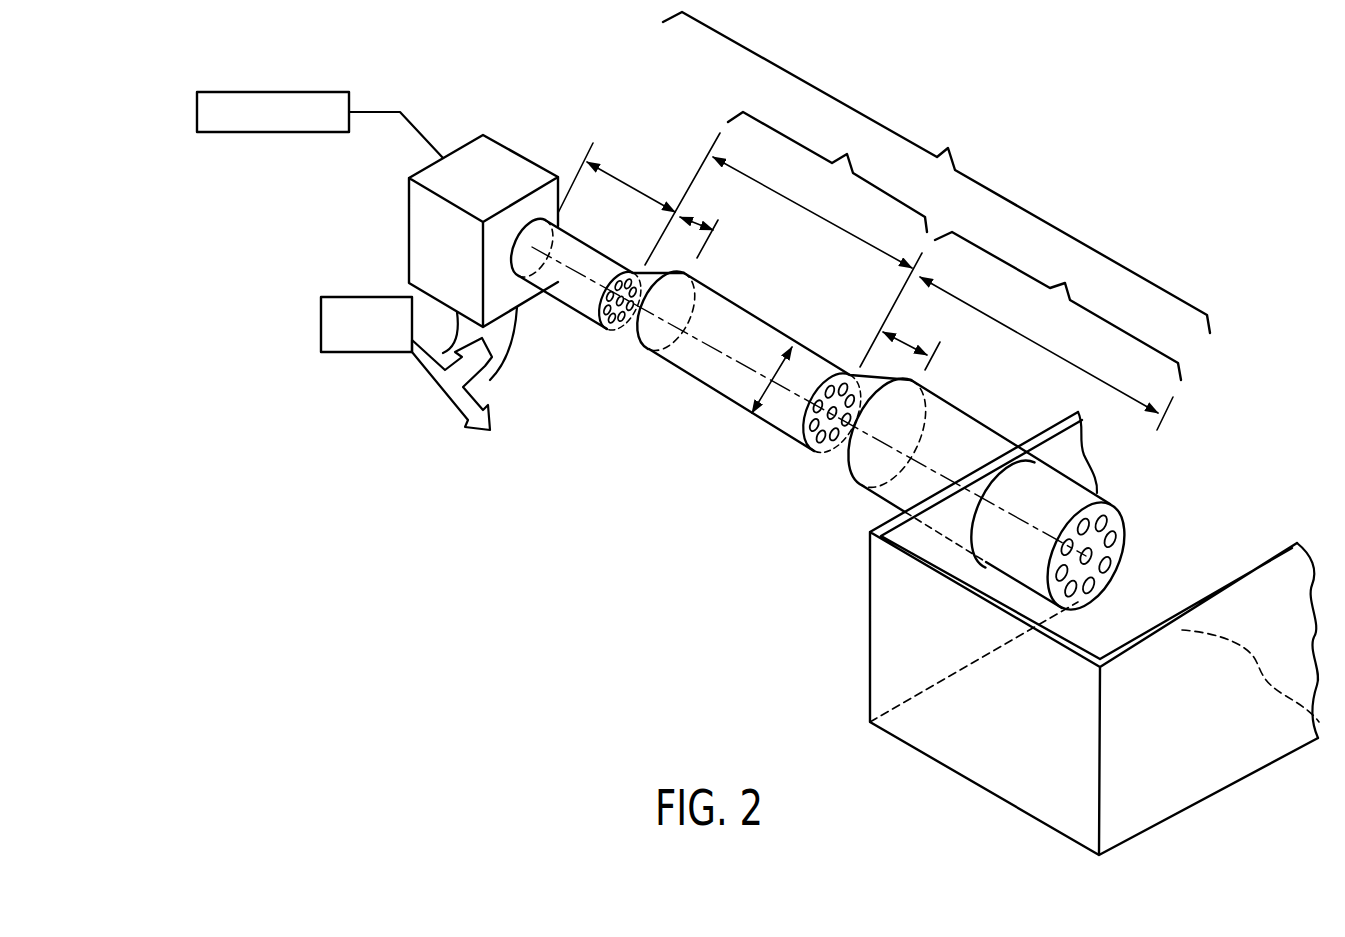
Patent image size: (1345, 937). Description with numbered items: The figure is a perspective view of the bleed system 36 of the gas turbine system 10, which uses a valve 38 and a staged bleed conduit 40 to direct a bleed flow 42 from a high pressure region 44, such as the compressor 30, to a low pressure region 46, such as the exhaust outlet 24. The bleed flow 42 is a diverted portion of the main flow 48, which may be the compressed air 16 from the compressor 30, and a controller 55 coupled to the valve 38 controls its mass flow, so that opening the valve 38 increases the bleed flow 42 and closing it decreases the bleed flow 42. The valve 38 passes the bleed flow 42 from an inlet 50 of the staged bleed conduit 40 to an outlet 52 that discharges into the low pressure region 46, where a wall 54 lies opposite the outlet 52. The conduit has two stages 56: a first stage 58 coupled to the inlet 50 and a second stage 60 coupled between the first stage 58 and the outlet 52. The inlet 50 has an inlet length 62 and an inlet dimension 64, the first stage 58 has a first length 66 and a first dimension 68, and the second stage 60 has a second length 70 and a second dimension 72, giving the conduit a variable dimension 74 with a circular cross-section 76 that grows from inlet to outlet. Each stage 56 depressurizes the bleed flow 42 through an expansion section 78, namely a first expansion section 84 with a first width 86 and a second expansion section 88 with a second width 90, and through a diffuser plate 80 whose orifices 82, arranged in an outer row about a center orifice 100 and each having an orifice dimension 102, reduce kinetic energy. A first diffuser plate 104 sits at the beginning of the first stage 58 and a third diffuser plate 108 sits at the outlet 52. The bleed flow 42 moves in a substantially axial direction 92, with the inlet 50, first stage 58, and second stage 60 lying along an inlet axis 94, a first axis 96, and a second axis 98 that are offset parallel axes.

The gas turbine system 10 is at (522, 675).
The compressed air 16 is at (431, 391).
The exhaust outlet 24 is at (1063, 633).
The compressor 30 is at (366, 287).
The bleed system 36 is at (443, 480).
The valve 38 is at (523, 153).
The staged bleed conduit 40 is at (936, 172).
The bleed flow 42 is at (485, 380).
The high pressure region 44 is at (380, 339).
The low pressure region 46 is at (1081, 633).
The main flow 48 is at (433, 387).
The inlet 50 is at (522, 274).
The outlet 52 is at (1136, 498).
The wall 54 is at (1215, 757).
The controller 55 is at (274, 92).
The stages 56 is at (731, 396).
The first stage 58 is at (827, 172).
The second stage 60 is at (1058, 306).
The inlet length 62 is at (632, 182).
The inlet dimension 64 is at (567, 308).
The first length 66 is at (813, 213).
The first dimension 68 is at (695, 388).
The second length 70 is at (1038, 343).
The second dimension 72 is at (948, 392).
The variable dimension 74 is at (772, 375).
The cross-section 76 is at (892, 478).
The expansion section 78 is at (725, 476).
The diffuser plate 80 is at (937, 401).
The orifices 82 is at (1106, 596).
The first expansion section 84 is at (644, 478).
The first width 86 is at (693, 221).
The second expansion section 88 is at (843, 593).
The second width 90 is at (908, 343).
The axial direction 92 is at (1156, 606).
The inlet axis 94 is at (618, 223).
The first axis 96 is at (762, 280).
The second axis 98 is at (940, 466).
The center orifice 100 is at (1082, 511).
The orifice dimension 102 is at (1119, 570).
The first diffuser plate 104 is at (620, 343).
The third diffuser plate 108 is at (808, 450).